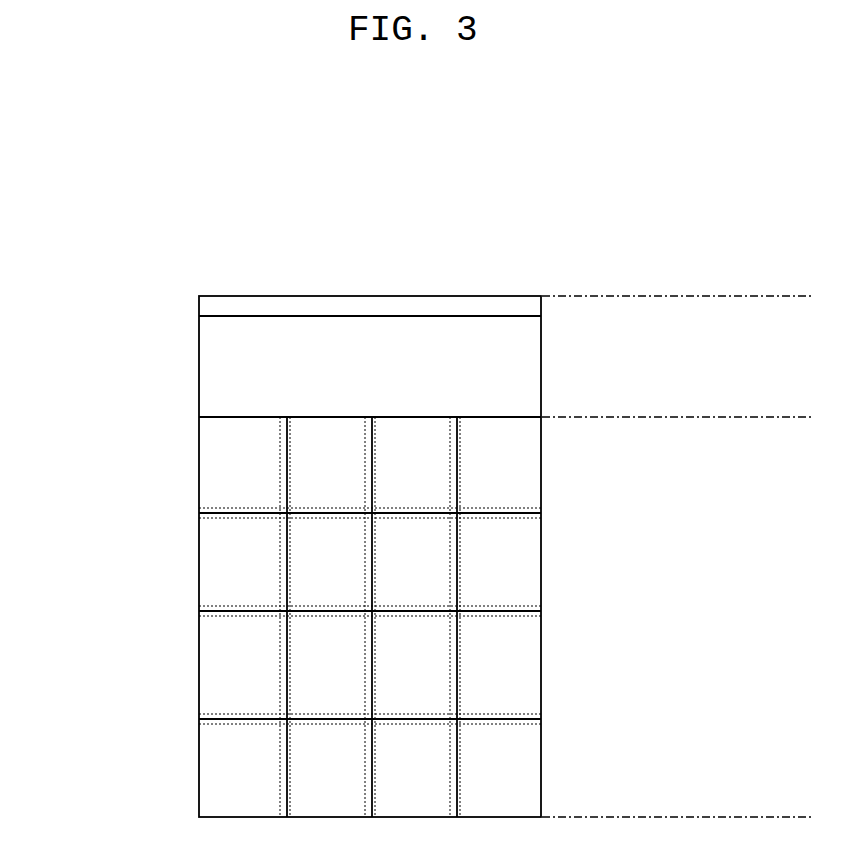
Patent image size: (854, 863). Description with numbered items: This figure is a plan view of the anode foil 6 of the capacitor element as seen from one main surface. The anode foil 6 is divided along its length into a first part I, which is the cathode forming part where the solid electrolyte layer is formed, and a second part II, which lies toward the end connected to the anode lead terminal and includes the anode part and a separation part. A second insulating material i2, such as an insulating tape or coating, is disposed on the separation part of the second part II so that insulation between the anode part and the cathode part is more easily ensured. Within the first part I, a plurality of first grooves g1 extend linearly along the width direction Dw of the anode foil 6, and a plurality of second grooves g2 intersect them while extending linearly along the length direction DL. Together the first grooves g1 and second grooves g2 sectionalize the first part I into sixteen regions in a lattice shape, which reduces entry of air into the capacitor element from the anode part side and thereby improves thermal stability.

The anode foil 6 is at (527, 306).
The second insulating material i2 is at (522, 353).
The second grooves g2 is at (282, 481).
The first grooves g1 is at (522, 513).
The width direction Dw is at (513, 227).
The length direction DL is at (93, 358).
The first part I is at (697, 417).
The second part II is at (697, 296).